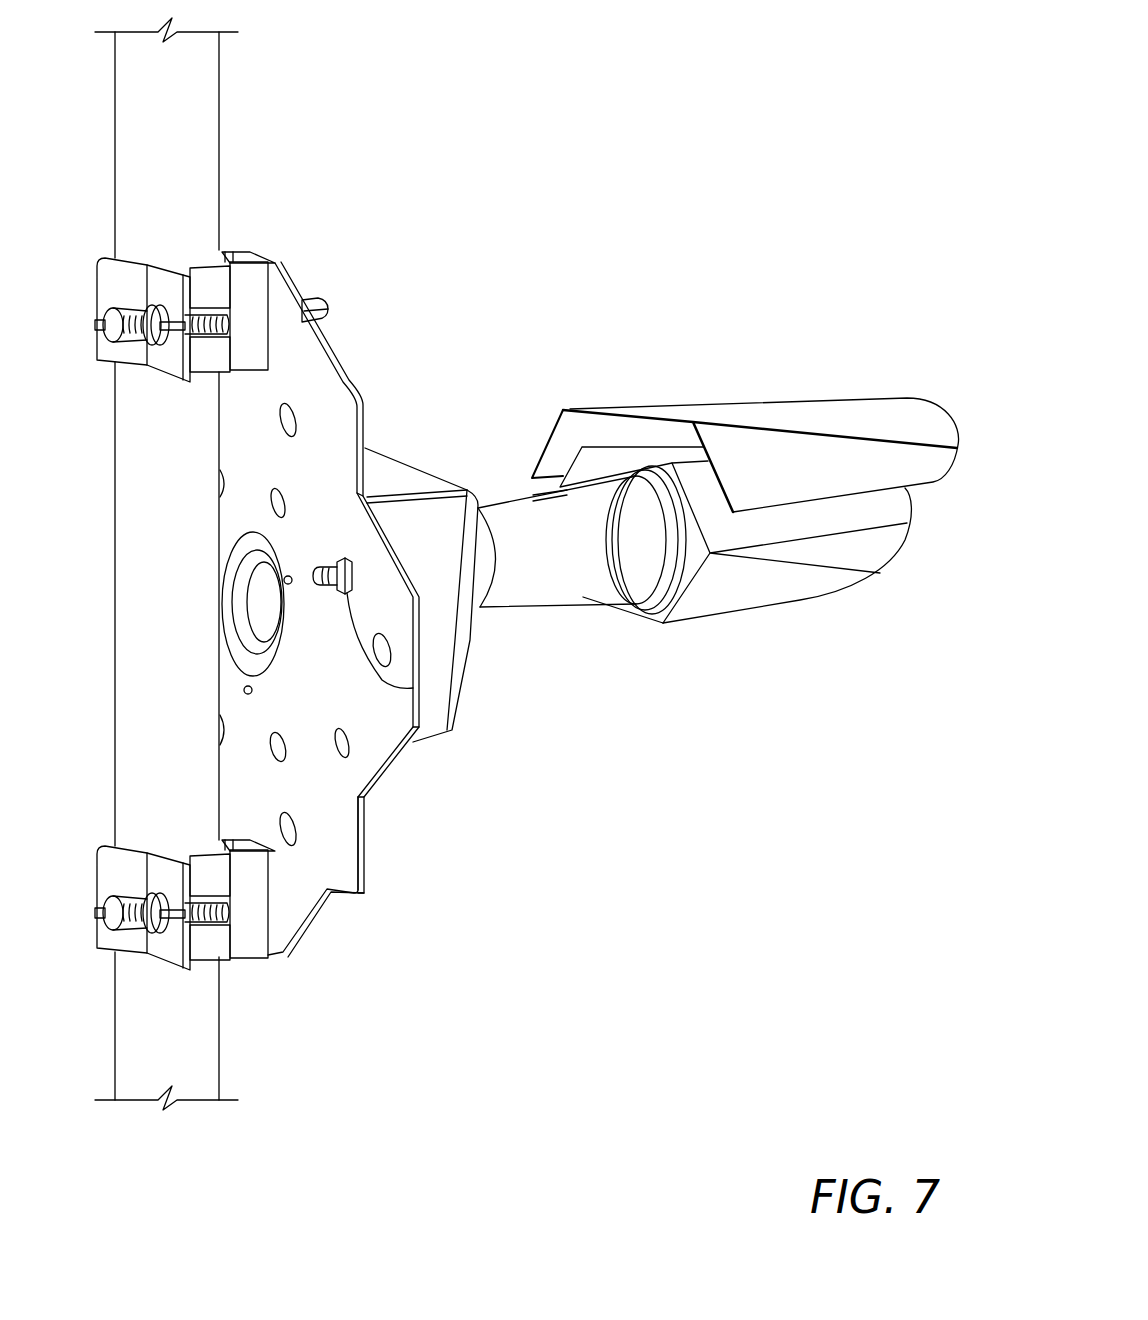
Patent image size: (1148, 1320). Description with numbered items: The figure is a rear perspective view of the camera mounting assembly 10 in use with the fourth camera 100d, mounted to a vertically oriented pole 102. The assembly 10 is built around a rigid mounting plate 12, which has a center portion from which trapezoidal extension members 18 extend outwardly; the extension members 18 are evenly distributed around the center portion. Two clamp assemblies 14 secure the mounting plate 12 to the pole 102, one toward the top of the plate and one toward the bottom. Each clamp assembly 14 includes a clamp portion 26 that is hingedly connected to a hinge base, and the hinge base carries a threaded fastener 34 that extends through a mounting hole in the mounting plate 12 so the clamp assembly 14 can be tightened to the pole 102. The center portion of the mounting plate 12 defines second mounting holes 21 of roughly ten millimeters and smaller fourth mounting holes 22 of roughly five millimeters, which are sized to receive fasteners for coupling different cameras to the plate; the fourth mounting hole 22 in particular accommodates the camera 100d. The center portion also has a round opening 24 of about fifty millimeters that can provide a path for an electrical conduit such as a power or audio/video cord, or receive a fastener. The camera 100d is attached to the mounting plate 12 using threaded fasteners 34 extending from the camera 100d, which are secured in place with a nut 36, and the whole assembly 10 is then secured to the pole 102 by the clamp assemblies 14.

The pole 102 is at (197, 125).
The camera mounting assembly 10 is at (320, 243).
The clamp assembly 14 is at (159, 548).
The clamp portion 26 is at (100, 358).
The extension member 18 is at (376, 609).
The second mounting hole 21 is at (293, 410).
The fourth mounting hole 22 is at (246, 496).
The threaded fastener 34 is at (315, 565).
The nut 36 is at (372, 688).
The opening 24 is at (410, 745).
The mounting plate 12 is at (345, 820).
The fourth camera 100d is at (765, 385).